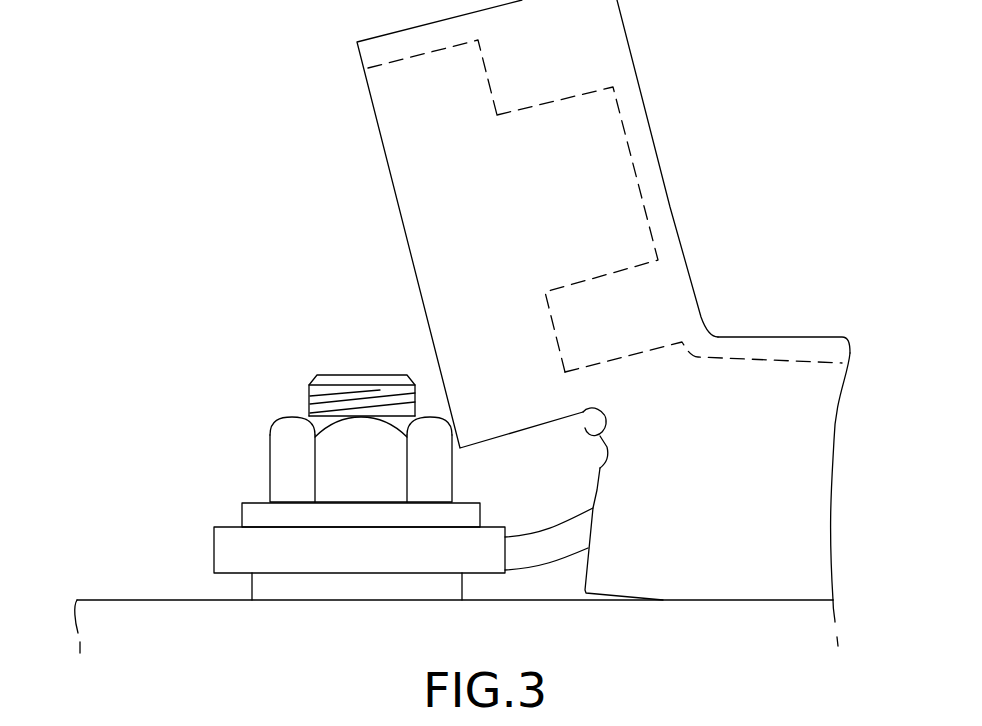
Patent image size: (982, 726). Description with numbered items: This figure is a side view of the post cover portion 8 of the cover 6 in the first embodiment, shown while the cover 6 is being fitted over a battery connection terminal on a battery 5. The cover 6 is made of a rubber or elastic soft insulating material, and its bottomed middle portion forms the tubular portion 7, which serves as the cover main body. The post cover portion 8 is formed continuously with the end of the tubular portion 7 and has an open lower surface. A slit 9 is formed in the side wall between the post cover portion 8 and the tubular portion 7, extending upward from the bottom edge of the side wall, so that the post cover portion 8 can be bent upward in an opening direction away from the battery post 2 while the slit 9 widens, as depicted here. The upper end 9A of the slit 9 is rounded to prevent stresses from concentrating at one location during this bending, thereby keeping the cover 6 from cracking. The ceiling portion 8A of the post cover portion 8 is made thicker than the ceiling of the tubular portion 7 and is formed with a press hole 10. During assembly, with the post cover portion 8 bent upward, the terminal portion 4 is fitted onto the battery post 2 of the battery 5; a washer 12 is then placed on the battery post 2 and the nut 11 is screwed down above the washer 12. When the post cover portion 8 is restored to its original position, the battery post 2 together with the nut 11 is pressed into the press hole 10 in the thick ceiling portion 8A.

The battery post 2 is at (313, 375).
The terminal portion 4 is at (242, 550).
The battery 5 is at (128, 622).
The cover 6 is at (713, 447).
The tubular portion 7 is at (787, 335).
The post cover portion 8 is at (537, 224).
The ceiling portion 8A is at (487, 73).
The slit 9 is at (597, 535).
The upper end of slit 9A is at (605, 432).
The press hole 10 is at (578, 95).
The nut 11 is at (290, 440).
The washer 12 is at (262, 515).